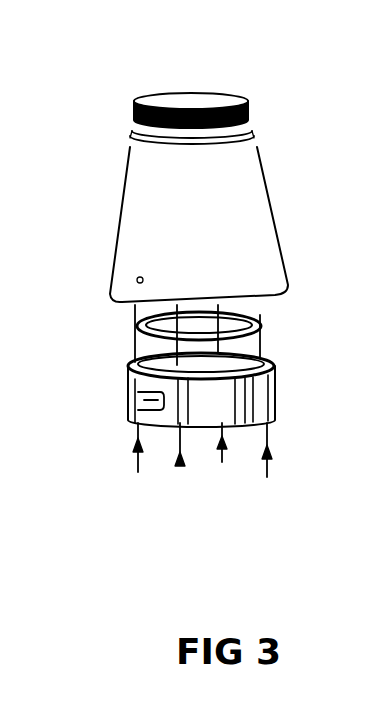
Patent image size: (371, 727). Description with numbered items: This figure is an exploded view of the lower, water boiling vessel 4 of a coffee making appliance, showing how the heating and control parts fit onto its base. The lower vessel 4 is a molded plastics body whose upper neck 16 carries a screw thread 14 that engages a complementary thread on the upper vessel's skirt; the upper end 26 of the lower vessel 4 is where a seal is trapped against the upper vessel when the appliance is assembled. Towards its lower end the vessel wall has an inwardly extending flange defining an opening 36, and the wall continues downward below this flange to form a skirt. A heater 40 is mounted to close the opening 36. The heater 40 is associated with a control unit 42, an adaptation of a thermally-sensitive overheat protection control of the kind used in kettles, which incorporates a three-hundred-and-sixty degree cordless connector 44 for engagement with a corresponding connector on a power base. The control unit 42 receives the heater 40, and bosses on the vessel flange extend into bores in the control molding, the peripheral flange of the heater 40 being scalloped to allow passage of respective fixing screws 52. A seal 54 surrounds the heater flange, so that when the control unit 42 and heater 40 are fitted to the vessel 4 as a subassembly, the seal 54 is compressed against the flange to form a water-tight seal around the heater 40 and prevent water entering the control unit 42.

The lower vessel 4 is at (260, 235).
The screw thread 14 is at (248, 118).
The upper neck 16 is at (244, 103).
The upper end 26 is at (241, 100).
The opening 36 is at (133, 408).
The heater 40 is at (258, 352).
The control unit 42 is at (238, 396).
The cordless connector 44 is at (162, 423).
The fixing screws 52 is at (136, 472).
The seal 54 is at (265, 314).